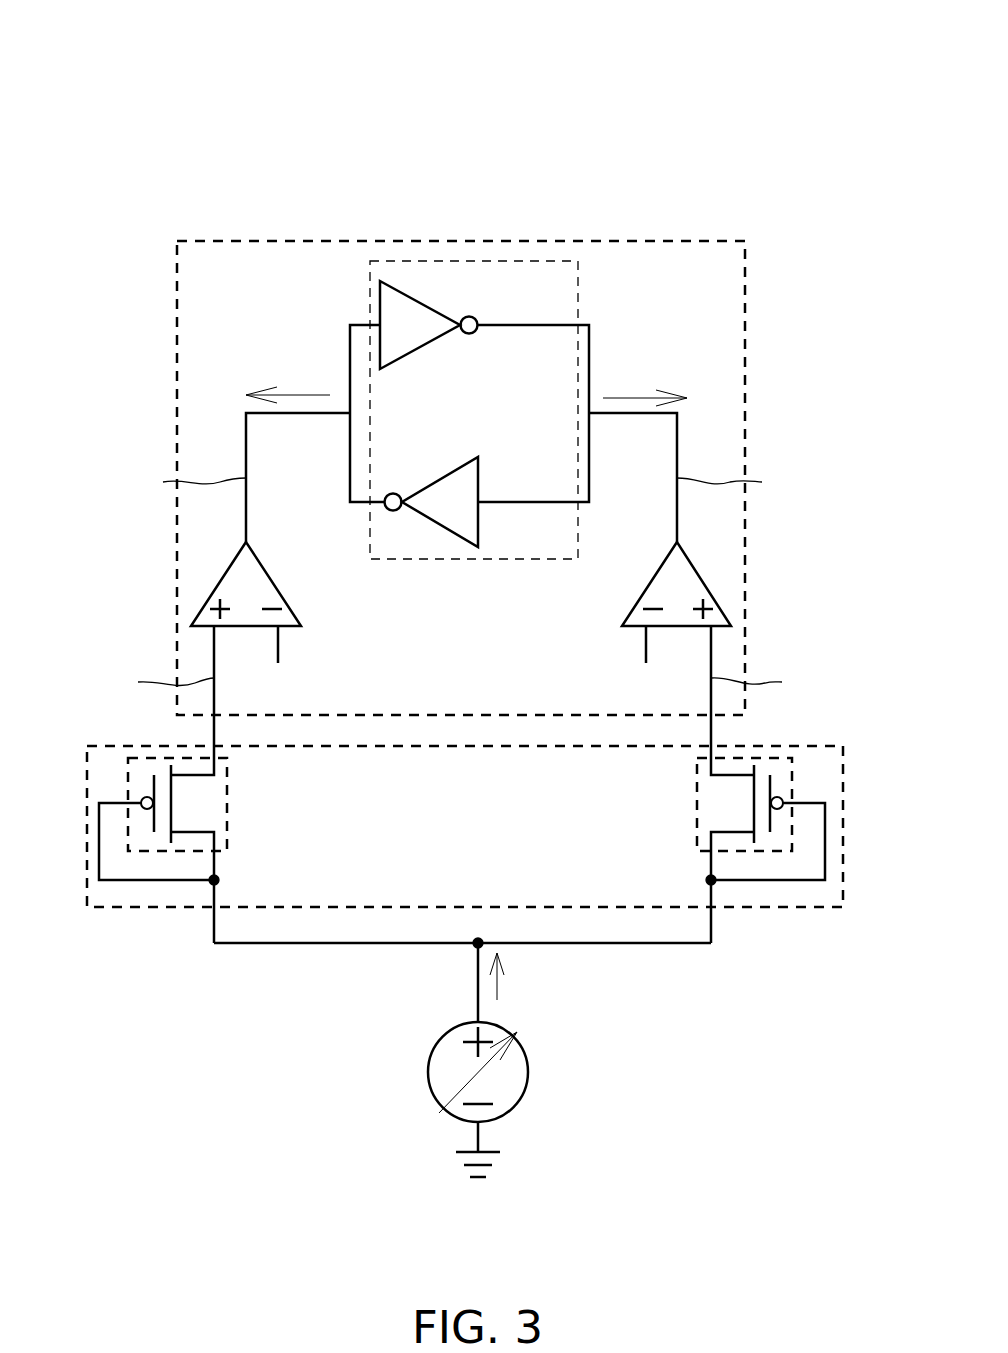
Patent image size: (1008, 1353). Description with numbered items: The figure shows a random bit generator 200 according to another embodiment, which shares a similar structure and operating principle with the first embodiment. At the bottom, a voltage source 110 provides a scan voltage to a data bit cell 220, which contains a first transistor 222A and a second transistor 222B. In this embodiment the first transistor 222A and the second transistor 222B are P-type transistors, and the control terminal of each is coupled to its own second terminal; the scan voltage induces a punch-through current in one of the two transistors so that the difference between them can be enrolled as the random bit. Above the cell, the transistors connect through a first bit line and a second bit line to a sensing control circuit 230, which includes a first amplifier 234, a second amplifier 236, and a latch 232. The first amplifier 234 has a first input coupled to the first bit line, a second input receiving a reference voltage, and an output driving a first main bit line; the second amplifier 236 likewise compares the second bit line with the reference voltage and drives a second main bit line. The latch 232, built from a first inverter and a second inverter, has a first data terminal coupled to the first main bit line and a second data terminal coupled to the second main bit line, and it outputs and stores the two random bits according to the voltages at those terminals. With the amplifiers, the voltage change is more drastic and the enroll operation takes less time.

The random bit generator 200 is at (687, 106).
The sensing control circuit 230 is at (417, 241).
The latch 232 is at (530, 261).
The first amplifier 234 is at (273, 580).
The second amplifier 236 is at (648, 580).
The data bit cell 220 is at (797, 907).
The first transistor 222A is at (228, 812).
The second transistor 222B is at (697, 812).
The voltage source 110 is at (530, 1072).